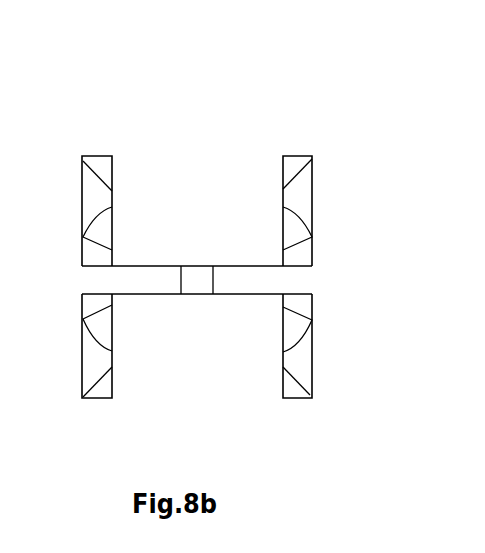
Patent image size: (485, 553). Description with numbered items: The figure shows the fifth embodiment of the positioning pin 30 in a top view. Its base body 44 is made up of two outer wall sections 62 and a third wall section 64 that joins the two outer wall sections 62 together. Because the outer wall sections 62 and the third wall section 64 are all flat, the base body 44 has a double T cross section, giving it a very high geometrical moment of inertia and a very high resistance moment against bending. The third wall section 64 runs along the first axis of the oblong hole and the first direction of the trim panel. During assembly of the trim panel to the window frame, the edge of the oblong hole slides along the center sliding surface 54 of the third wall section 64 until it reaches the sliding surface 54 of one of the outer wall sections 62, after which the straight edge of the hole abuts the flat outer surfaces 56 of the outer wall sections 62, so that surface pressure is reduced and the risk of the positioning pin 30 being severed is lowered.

The positioning pin 30 is at (157, 130).
The base body 44 is at (199, 191).
The outer surface 56 is at (82, 184).
The sliding surface 54 is at (189, 285).
The outer wall section 62 is at (102, 370).
The third wall section 64 is at (272, 278).